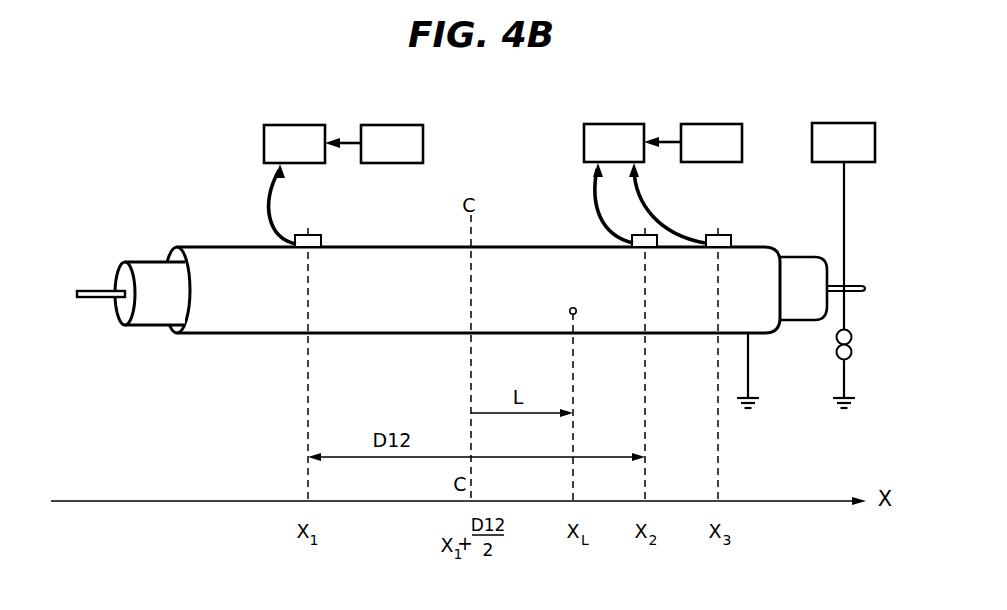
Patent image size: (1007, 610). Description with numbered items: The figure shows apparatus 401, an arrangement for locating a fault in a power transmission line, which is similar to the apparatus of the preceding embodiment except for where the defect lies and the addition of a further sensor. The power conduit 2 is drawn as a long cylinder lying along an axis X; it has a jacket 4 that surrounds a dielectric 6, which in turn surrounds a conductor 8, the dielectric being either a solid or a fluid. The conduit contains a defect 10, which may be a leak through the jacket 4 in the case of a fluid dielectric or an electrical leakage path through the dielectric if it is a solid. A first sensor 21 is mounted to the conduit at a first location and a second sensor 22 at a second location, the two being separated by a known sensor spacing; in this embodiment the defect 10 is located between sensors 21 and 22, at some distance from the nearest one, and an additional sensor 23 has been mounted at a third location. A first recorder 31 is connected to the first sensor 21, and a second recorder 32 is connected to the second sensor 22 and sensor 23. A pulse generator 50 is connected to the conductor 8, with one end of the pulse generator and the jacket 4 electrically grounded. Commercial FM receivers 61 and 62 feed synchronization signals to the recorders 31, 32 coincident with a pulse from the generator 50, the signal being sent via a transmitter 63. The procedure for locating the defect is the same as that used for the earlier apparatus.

The apparatus 401 is at (163, 92).
The power conduit 2 is at (418, 253).
The jacket 4 is at (170, 258).
The dielectric 6 is at (123, 280).
The conductor 8 is at (78, 292).
The defect 10 is at (568, 306).
The first sensor 21 is at (322, 240).
The second sensor 22 is at (640, 247).
The sensor 23 is at (728, 237).
The first recorder 31 is at (272, 146).
The second recorder 32 is at (597, 146).
The pulse generator 50 is at (835, 352).
The FM receiver 61 is at (412, 140).
The FM receiver 62 is at (730, 133).
The transmitter 63 is at (860, 150).